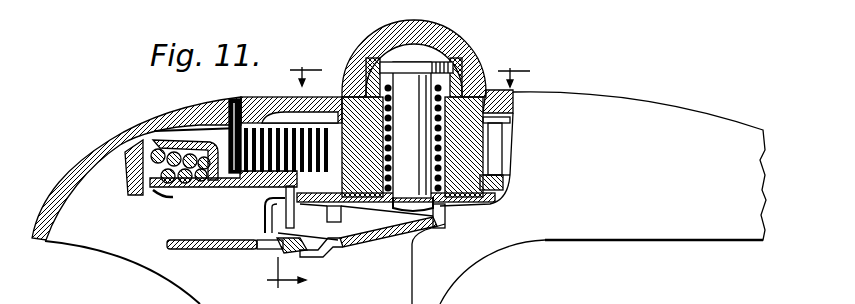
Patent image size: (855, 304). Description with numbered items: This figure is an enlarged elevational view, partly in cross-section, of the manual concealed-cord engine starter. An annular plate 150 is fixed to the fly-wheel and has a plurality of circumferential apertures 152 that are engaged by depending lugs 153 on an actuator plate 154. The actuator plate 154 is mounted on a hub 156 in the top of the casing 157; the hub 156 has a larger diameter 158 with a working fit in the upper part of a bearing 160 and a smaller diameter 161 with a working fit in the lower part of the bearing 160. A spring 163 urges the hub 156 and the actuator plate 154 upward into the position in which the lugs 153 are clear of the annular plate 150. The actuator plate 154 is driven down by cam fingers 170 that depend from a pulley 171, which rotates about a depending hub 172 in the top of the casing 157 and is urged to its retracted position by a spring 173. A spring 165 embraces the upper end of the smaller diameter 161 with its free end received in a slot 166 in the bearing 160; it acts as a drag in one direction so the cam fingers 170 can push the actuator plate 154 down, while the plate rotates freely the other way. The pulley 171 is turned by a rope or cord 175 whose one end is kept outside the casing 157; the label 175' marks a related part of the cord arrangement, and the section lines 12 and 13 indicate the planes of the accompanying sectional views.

The section line 12- 12 is at (410, 69).
The section line 13- 13 is at (286, 280).
The annular plate 150 is at (200, 250).
The circumferential apertures 152 is at (275, 256).
The depending lugs 153 is at (266, 222).
The actuator plate 154 is at (368, 225).
The hub 156 is at (403, 64).
The casing 157 is at (670, 96).
The larger diameter 158 is at (428, 62).
The bearing 160 is at (511, 120).
The smaller diameter 161 is at (447, 222).
The spring 163 is at (503, 165).
The spring 165 is at (486, 88).
The slot 166 is at (503, 145).
The cam fingers 170 is at (300, 256).
The pulley 171 is at (190, 197).
The depending hub 172 is at (328, 95).
The spring 173 is at (284, 127).
The rope or cord 175 is at (136, 168).
The core 175' is at (300, 119).